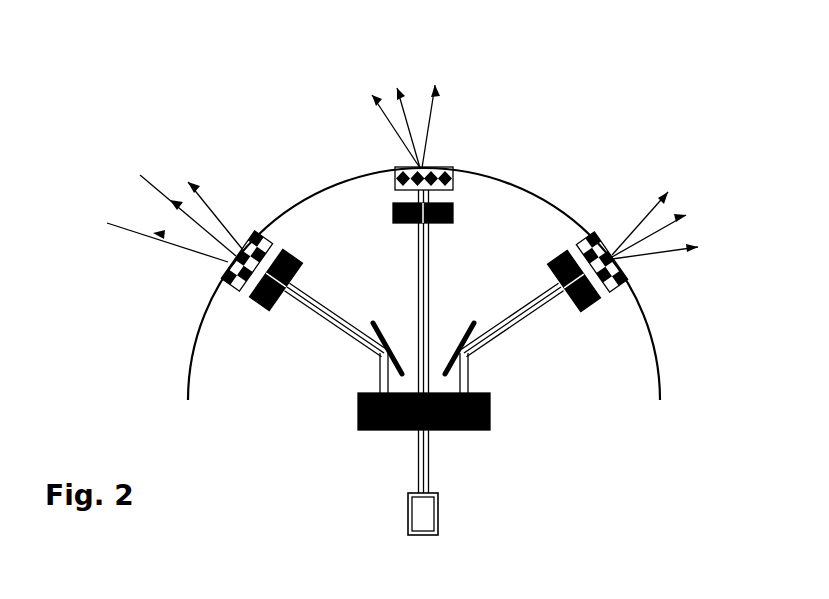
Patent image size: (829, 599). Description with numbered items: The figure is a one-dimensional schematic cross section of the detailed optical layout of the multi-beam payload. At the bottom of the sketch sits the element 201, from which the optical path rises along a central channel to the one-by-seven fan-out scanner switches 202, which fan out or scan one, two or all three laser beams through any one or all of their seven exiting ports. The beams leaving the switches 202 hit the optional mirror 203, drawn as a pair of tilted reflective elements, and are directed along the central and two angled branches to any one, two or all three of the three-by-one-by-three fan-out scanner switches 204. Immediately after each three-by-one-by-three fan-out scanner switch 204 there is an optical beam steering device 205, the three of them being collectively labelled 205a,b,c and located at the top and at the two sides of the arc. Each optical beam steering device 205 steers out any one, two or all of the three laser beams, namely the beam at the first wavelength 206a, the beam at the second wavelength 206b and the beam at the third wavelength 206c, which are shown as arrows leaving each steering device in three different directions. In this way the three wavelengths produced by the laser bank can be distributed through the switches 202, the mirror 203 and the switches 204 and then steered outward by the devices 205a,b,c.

The X-ray source 201 is at (425, 523).
The 1×7 fan-out scanner switches 202 is at (360, 412).
The optional mirror 203 is at (390, 333).
The 3×(1×3) fan-out scanner switches 204 is at (550, 268).
The optical beam steering device 205 is at (260, 233).
The optical beam steering devices 205a,b,c is at (493, 341).
The laser beam at wavelength λ1 206a is at (240, 250).
The laser beam at wavelength λ2 206b is at (712, 213).
The laser beam at wavelength λ3 206c is at (727, 263).